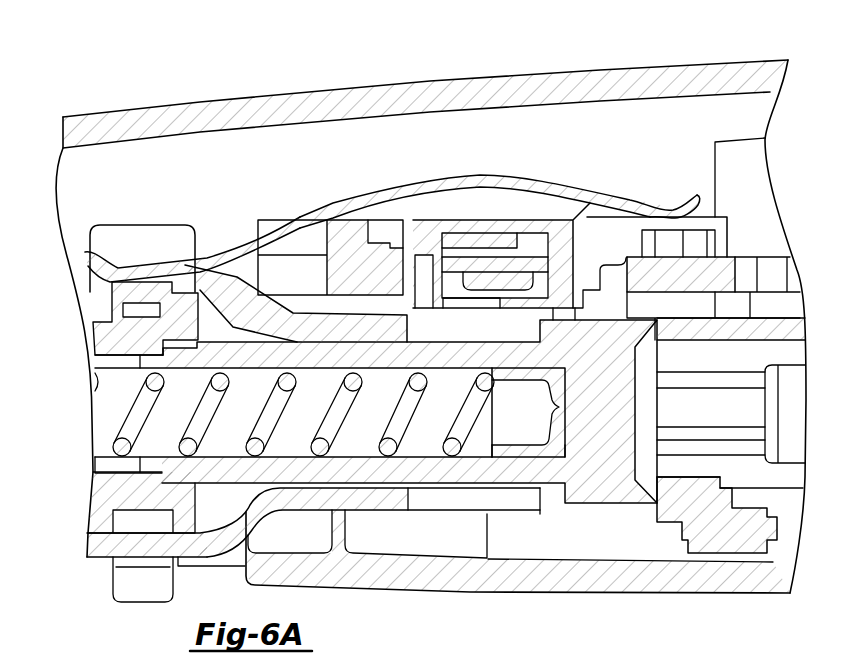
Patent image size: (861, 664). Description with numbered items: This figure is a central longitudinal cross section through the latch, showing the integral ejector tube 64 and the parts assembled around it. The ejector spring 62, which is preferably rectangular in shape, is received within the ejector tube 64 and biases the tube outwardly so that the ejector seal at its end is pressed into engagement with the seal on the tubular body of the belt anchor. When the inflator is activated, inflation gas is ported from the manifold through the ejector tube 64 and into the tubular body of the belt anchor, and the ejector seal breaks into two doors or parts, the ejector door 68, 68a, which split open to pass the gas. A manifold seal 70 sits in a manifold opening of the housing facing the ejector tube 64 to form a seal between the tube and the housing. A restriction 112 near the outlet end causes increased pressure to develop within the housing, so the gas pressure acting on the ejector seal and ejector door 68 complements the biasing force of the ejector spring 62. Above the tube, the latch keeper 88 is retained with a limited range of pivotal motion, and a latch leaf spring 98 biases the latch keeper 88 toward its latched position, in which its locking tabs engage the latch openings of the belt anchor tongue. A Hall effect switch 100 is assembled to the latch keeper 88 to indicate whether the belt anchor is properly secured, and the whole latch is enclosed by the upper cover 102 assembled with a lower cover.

The upper cover 102 is at (658, 78).
The latch leaf spring 98 is at (475, 180).
The Hall effect switch 100 is at (497, 236).
The latch keeper 88 is at (672, 275).
The ejector tube 64 is at (228, 345).
The manifold seal 70 is at (118, 494).
The ejector spring 62 is at (449, 450).
The ejector door 68 is at (568, 387).
The ejector door part 68a is at (568, 434).
The restriction 112 is at (618, 378).